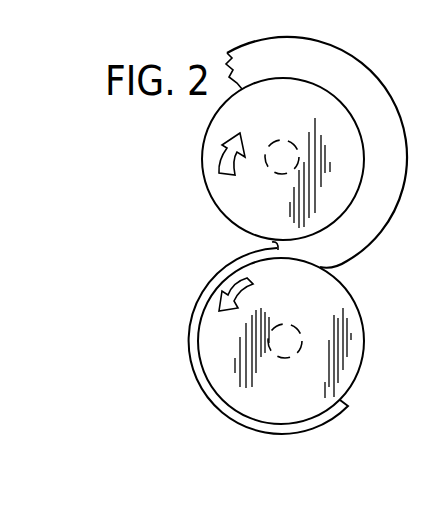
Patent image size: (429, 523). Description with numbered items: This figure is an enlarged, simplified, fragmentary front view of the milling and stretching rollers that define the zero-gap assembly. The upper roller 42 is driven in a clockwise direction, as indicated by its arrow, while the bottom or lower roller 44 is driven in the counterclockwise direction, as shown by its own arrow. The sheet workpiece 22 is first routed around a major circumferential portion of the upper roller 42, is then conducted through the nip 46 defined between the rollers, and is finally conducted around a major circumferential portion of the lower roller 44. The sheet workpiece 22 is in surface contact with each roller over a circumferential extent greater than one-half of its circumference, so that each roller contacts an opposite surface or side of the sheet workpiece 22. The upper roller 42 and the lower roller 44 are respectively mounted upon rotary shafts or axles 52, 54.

The sheet workpiece 22 is at (355, 76).
The upper roller 42 is at (207, 160).
The lower roller 44 is at (355, 345).
The nip 46 is at (272, 242).
The rotary shaft or axle 52 is at (277, 144).
The rotary shaft or axle 54 is at (296, 326).